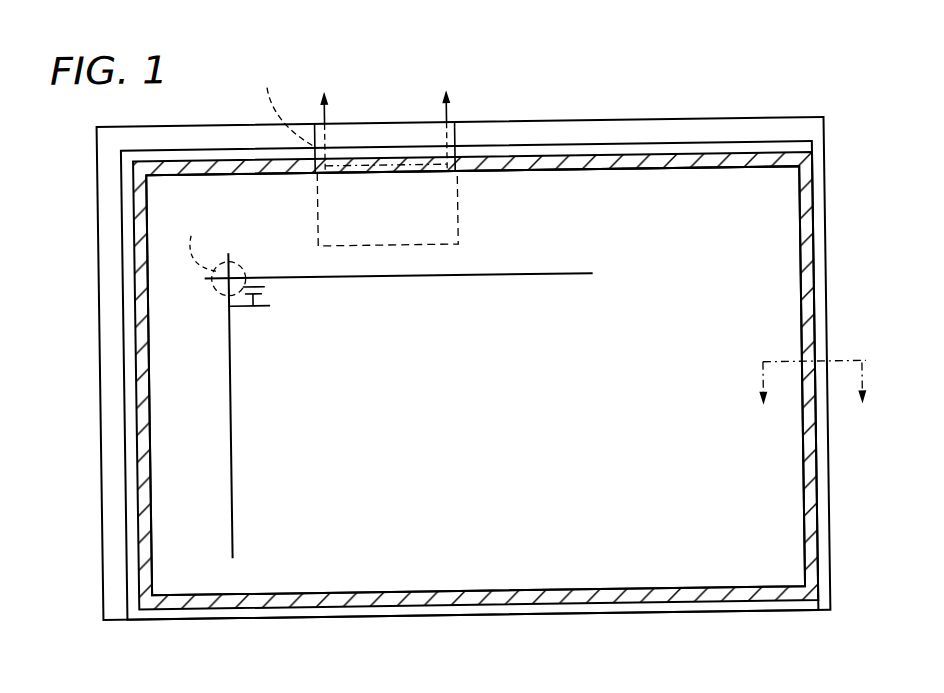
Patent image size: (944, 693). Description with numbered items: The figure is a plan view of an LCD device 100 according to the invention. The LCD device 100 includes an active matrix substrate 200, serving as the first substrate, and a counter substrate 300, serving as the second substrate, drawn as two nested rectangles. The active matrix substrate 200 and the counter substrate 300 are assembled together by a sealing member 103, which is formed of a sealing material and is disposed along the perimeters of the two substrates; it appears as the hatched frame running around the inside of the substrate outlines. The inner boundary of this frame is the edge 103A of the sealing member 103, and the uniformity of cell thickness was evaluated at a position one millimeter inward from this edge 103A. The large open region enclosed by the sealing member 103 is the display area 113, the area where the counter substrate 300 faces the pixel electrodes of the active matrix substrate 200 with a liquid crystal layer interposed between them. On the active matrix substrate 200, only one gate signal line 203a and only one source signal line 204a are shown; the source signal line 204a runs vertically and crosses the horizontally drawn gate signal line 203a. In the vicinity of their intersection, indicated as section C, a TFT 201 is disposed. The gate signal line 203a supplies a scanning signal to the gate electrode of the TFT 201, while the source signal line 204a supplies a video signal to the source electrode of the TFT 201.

The LCD device 100 is at (767, 102).
The active matrix substrate 200 is at (108, 243).
The counter substrate 300 is at (623, 152).
The sealing member 103 is at (708, 161).
The edge of the sealing member 103A is at (666, 173).
The display area 113 is at (715, 572).
The gate signal line 203a is at (534, 274).
The source signal line 204a is at (230, 400).
The TFT 201 is at (274, 295).